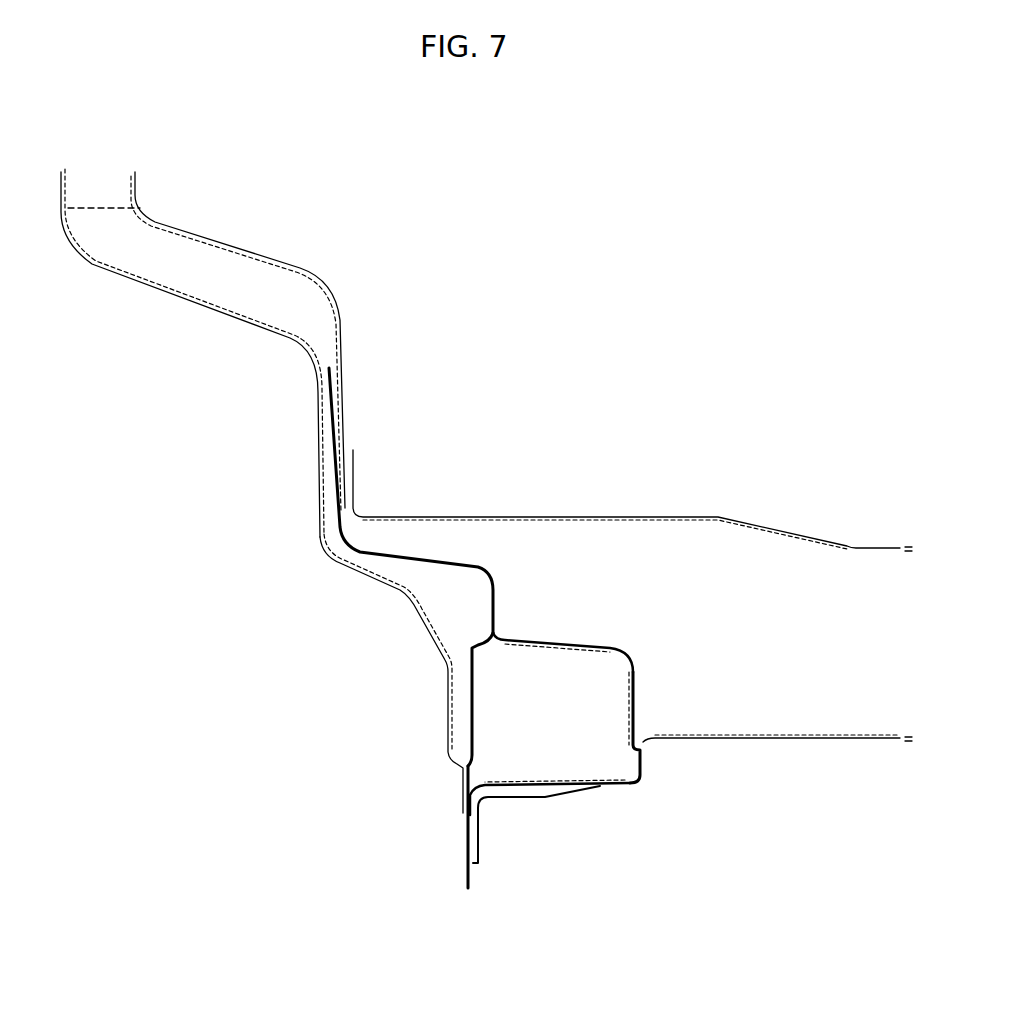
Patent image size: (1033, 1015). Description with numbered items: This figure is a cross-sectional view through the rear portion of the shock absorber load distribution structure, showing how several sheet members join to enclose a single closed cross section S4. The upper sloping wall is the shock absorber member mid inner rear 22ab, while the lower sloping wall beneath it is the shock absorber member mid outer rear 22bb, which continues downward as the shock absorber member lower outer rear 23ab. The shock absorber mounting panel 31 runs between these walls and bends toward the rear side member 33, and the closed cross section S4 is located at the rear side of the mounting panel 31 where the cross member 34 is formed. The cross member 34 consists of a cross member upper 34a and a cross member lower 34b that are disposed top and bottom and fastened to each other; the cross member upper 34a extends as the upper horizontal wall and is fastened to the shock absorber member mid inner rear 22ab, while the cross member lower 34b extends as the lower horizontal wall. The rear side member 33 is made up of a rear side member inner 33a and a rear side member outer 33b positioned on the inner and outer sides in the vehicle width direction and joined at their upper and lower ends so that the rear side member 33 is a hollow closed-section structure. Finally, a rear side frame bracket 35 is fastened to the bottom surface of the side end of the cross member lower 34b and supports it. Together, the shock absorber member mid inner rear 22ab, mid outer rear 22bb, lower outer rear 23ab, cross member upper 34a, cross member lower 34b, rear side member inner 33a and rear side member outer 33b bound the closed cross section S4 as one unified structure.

The closed cross section S4 is at (102, 208).
The shock absorber member mid inner rear 22ab is at (297, 268).
The shock absorber member mid outer rear 22bb is at (258, 335).
The shock absorber member lower outer rear 23ab is at (398, 592).
The shock absorber mounting panel 31 is at (397, 550).
The rear side member 33 is at (593, 797).
The rear side member inner 33a is at (637, 688).
The rear side member outer 33b is at (475, 710).
The cross member 34 is at (632, 562).
The cross member upper 34a is at (672, 516).
The cross member lower 34b is at (778, 736).
The rear side frame bracket 35 is at (508, 797).